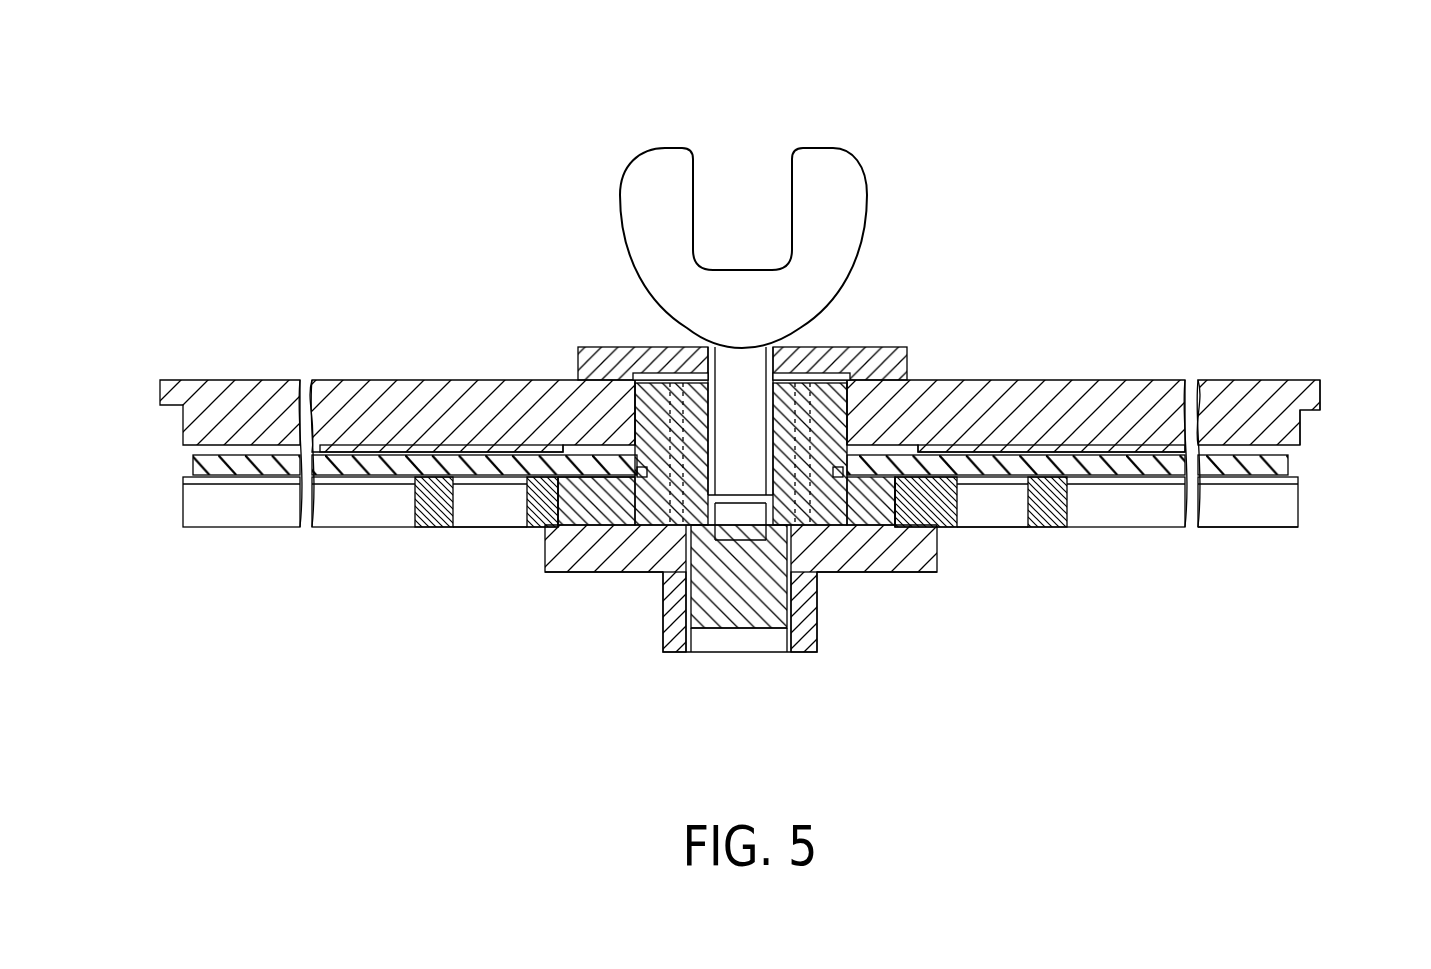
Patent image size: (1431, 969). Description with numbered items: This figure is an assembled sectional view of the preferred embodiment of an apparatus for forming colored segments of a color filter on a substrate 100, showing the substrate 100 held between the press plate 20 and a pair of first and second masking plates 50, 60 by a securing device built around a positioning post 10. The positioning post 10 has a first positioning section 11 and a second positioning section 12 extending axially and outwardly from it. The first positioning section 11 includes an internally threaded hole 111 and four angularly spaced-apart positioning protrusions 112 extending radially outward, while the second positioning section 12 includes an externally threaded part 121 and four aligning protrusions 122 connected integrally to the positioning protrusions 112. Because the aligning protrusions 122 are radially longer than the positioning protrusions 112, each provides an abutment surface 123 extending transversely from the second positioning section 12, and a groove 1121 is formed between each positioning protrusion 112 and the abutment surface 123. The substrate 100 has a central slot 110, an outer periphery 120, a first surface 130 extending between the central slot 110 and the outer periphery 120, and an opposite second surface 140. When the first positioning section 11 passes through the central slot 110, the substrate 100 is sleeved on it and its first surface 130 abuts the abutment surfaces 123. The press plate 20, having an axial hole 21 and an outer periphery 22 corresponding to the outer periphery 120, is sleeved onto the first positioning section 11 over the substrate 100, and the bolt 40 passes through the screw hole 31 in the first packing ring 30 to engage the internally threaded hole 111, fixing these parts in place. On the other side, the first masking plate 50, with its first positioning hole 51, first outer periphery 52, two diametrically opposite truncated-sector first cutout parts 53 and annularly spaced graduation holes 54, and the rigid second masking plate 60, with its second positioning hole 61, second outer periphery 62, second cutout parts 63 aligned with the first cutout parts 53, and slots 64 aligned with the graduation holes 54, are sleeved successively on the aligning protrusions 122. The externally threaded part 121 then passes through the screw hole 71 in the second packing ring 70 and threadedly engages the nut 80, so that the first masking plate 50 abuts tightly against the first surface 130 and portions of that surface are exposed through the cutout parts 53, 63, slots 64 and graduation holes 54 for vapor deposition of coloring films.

The positioning post 10 is at (853, 393).
The first positioning section 11 is at (813, 378).
The second positioning section 12 is at (677, 495).
The press plate 20 is at (346, 378).
The axial hole 21 is at (633, 409).
The outer periphery 22 is at (162, 382).
The first packing ring 30 is at (577, 344).
The screw hole 31 is at (698, 348).
The bolt 40 is at (828, 145).
The first masking plate 50 is at (180, 484).
The first positioning hole 51 is at (522, 487).
The first outer periphery 52 is at (183, 477).
The first cutout parts 53 is at (218, 482).
The graduation holes 54 is at (457, 490).
The second masking plate 60 is at (1292, 530).
The second positioning hole 61 is at (944, 525).
The second outer periphery 62 is at (1300, 506).
The second cutout parts 63 is at (263, 507).
The slots 64 is at (500, 507).
The second packing ring 70 is at (850, 578).
The screw hole 71 is at (833, 574).
The nut 80 is at (807, 640).
The substrate 100 is at (1298, 452).
The central slot 110 is at (860, 460).
The internally threaded hole 111 is at (668, 376).
The positioning protrusions 112 is at (650, 432).
The outer periphery 120 is at (1290, 462).
The externally threaded part 121 is at (693, 543).
The aligning protrusions 122 is at (608, 500).
The abutment surface 123 is at (588, 488).
The first surface 130 is at (1113, 485).
The second surface 140 is at (1090, 450).
The groove 1121 is at (862, 560).